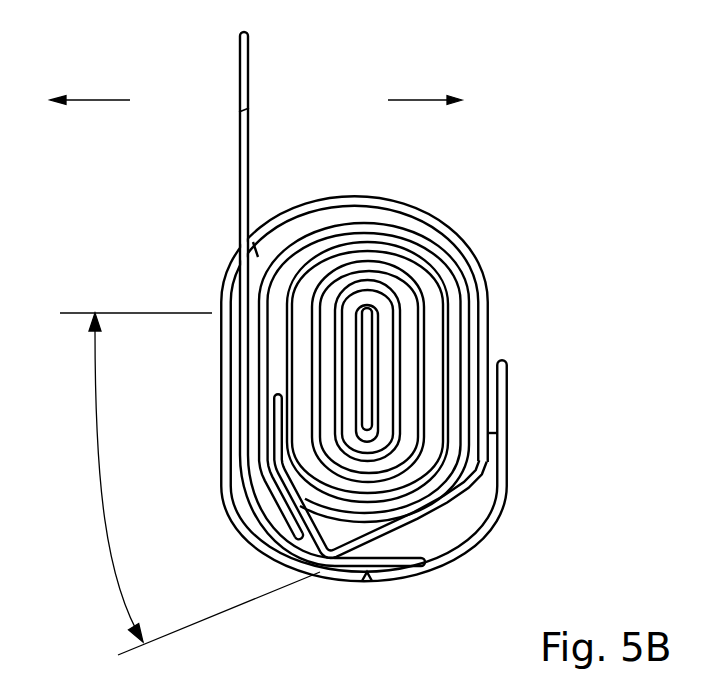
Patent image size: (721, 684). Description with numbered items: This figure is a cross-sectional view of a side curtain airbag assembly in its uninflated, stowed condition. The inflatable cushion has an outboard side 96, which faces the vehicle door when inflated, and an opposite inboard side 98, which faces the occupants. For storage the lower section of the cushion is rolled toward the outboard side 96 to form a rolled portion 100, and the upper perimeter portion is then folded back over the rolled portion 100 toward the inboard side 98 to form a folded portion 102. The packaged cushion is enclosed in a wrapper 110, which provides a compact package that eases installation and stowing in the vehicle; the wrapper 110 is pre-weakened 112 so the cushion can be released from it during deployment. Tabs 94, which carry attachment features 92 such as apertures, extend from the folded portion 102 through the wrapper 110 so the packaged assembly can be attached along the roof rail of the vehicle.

The attachment features 92 is at (240, 108).
The tabs 94 is at (240, 205).
The outboard side 96 is at (90, 100).
The inboard side 98 is at (419, 98).
The rolled portion 100 is at (440, 337).
The folded portion 102 is at (100, 558).
The wrapper 110 is at (447, 215).
The pre-weakened 112 is at (367, 582).